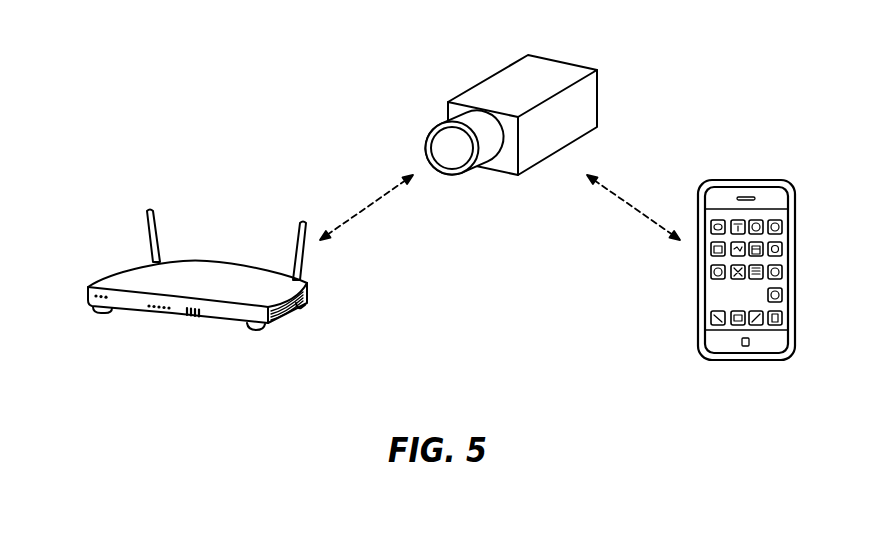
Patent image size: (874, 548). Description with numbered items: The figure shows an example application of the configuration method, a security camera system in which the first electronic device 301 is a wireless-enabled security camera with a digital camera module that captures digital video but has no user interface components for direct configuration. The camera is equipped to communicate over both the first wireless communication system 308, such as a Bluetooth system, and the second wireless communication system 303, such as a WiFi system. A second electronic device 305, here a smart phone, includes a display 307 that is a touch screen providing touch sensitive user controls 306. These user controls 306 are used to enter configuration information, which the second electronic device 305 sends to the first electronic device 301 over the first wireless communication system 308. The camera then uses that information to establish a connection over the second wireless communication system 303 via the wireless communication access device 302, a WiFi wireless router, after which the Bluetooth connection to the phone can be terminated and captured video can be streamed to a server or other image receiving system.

The first electronic device 301 is at (488, 78).
The wireless communication access device 302 is at (113, 273).
The second wireless communication system 303 is at (370, 205).
The second electronic device 305 is at (745, 180).
The user controls 306 is at (781, 295).
The display 307 is at (783, 217).
The first wireless communication system 308 is at (640, 210).